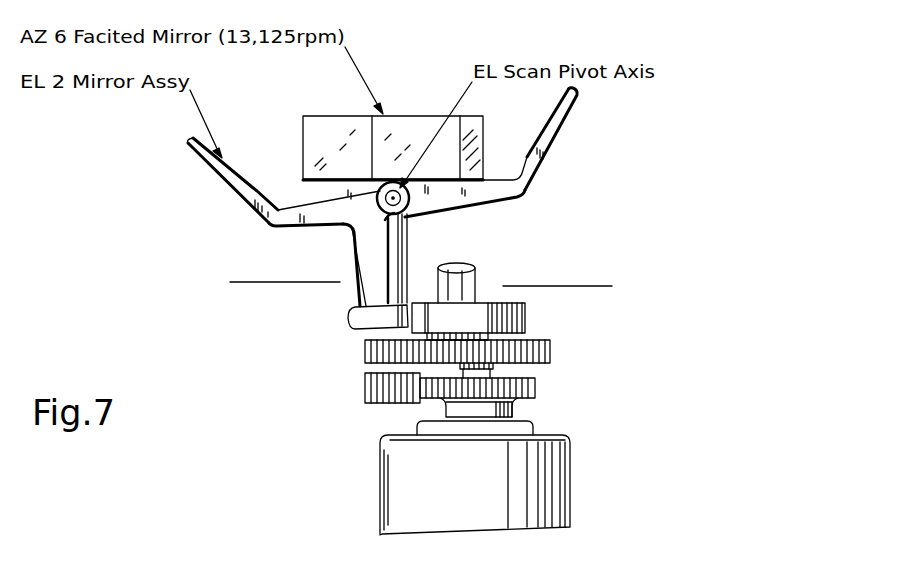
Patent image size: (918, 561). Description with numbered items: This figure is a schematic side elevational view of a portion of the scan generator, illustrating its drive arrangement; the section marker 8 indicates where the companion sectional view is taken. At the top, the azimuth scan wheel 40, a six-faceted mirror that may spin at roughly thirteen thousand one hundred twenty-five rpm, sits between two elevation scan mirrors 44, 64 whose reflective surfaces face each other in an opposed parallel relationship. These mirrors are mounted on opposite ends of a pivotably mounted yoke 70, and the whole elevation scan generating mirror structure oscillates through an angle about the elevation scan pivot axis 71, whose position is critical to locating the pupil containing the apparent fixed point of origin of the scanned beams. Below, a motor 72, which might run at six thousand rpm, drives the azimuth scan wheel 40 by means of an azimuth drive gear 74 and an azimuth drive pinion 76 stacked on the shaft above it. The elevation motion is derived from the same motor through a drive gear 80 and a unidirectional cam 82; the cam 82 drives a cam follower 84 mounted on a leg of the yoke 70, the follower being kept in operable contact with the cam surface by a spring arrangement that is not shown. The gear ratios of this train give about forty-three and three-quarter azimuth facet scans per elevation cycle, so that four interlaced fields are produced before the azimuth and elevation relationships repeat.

The section line 8- 8 is at (245, 272).
The azimuth scan wheel 40 is at (470, 124).
The elevation scan mirror 44 is at (222, 173).
The elevation scan mirror 64 is at (555, 130).
The yoke 70 is at (470, 200).
The axis 71 is at (407, 200).
The motor 72 is at (570, 495).
The azimuth drive gear 74 is at (535, 390).
The azimuth drive pinion 76 is at (367, 376).
The drive gear 80 is at (550, 345).
The unidirectional cam 82 is at (527, 323).
The cam follower 84 is at (352, 310).